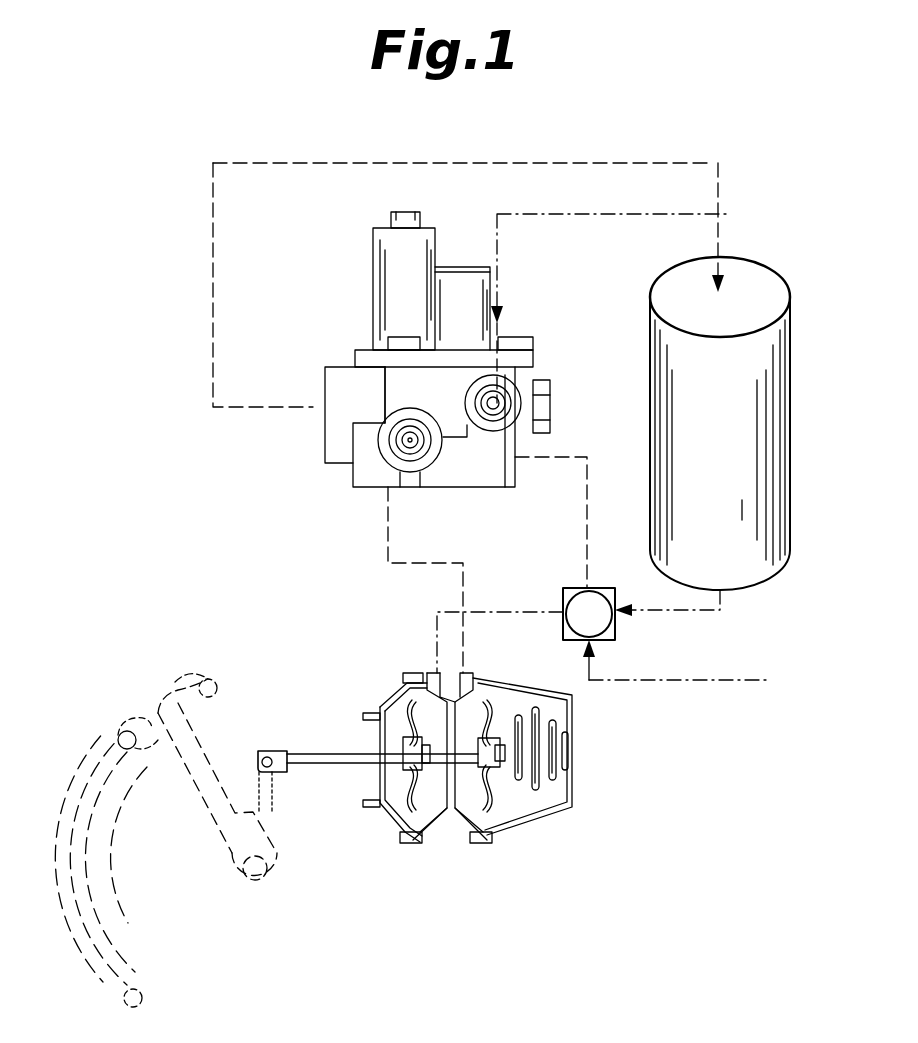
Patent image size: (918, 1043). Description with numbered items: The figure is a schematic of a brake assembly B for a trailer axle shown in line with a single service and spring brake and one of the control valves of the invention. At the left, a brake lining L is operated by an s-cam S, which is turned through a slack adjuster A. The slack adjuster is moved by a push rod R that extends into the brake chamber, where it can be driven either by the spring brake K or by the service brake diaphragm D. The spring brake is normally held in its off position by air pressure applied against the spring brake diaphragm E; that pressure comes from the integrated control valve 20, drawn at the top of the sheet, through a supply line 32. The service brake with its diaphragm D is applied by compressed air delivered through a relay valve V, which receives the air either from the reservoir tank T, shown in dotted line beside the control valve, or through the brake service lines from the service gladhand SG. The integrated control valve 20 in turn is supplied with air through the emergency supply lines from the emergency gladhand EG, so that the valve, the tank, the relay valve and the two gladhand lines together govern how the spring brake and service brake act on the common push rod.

The integrated control valve 20 is at (322, 456).
The supply line 32 is at (388, 548).
The reservoir tank T is at (650, 418).
The emergency gladhand EG is at (768, 197).
The relay valve V is at (572, 588).
The service gladhand SG is at (736, 683).
The brake assembly B is at (426, 780).
The push rod R is at (331, 750).
The service brake diaphragm D is at (393, 812).
The spring brake diaphragm E is at (511, 823).
The spring brake K is at (537, 805).
The slack adjuster A is at (279, 853).
The brake lining L is at (85, 750).
The s-cam S is at (134, 722).